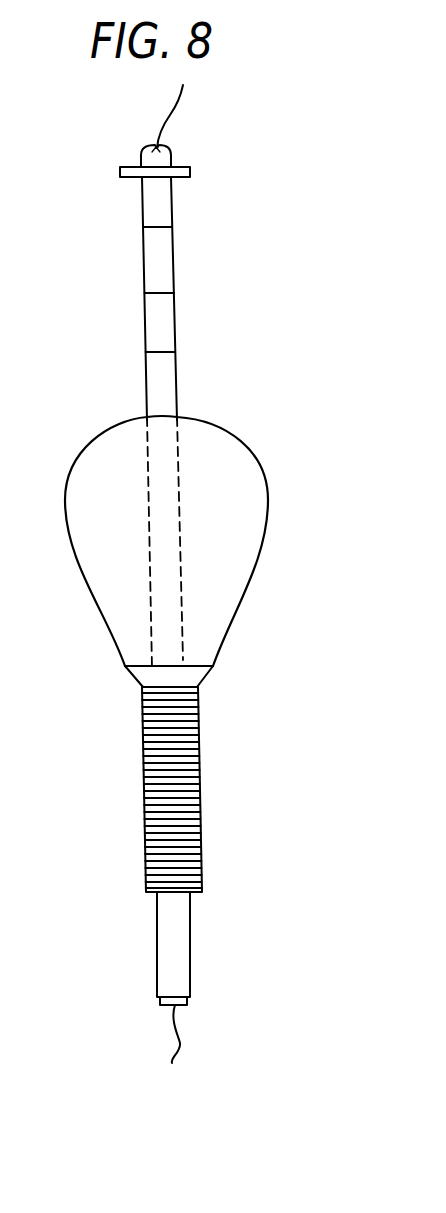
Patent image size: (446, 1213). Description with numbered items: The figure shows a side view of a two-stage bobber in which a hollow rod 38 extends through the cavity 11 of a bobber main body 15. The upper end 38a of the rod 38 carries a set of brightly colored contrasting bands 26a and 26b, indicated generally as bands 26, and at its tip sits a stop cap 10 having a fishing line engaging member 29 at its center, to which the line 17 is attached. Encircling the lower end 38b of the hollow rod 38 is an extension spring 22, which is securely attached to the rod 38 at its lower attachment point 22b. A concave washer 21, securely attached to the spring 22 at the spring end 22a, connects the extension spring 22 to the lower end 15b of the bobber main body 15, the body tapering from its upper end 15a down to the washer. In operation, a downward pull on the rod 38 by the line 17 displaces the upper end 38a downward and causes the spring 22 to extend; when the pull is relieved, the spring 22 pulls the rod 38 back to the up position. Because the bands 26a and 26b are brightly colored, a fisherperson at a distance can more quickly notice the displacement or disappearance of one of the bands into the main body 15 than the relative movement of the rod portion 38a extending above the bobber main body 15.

The stop cap 10 is at (165, 150).
The cavity 11 is at (167, 592).
The bobber main body 15 is at (103, 552).
The proximal end of balloon 15a is at (162, 417).
The lower end of bobber main body 15b is at (170, 662).
The line 17 is at (173, 108).
The concave washer 21 is at (143, 678).
The extension spring 22 is at (173, 793).
The spring end 22a is at (197, 687).
The spring attachment point 22b is at (148, 888).
The marker band 26 is at (152, 222).
The colored band 26a is at (162, 208).
The colored band 26b is at (162, 328).
The fishing line engaging member 29 is at (150, 144).
The hollow rod 38 is at (158, 385).
The upper end of rod 38a is at (162, 260).
The lower end of rod 38b is at (178, 938).